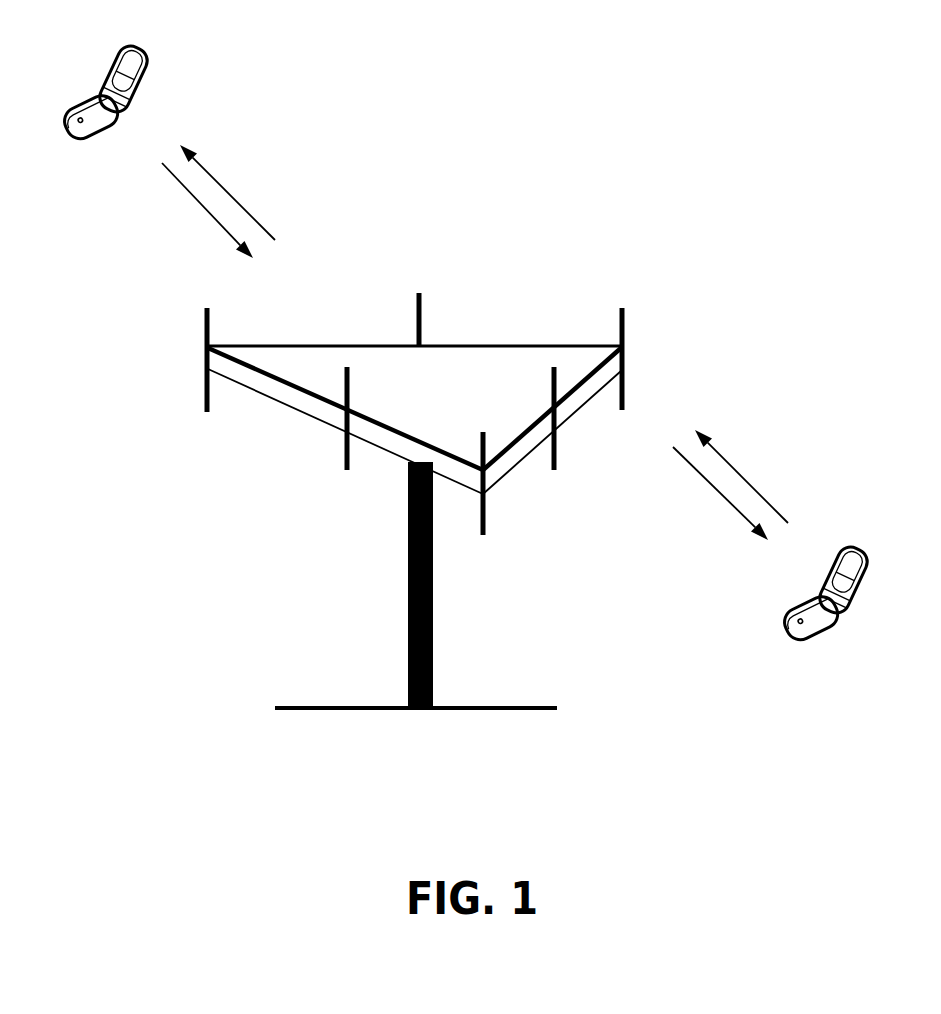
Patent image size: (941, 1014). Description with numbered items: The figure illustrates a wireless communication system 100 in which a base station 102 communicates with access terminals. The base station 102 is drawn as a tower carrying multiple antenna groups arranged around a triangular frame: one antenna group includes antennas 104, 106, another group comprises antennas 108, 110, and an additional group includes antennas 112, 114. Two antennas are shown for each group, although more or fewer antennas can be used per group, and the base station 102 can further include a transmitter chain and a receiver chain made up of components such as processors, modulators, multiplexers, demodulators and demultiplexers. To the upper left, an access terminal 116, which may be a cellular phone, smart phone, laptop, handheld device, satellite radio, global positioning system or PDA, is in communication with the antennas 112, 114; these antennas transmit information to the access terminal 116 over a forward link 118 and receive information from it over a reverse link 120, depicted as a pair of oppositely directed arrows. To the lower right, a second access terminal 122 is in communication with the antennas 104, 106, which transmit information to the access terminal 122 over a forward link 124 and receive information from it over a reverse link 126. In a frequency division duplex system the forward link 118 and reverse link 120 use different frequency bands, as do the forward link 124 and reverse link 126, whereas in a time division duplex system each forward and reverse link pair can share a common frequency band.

The wireless communication system 100 is at (594, 95).
The base station 102 is at (436, 712).
The antenna 104 is at (623, 312).
The antenna 106 is at (555, 440).
The antenna 108 is at (484, 508).
The antenna 110 is at (347, 466).
The antenna 112 is at (208, 312).
The antenna 114 is at (420, 304).
The access terminal 116 is at (122, 57).
The forward link 118 is at (230, 193).
The reverse link 120 is at (218, 228).
The access terminal 122 is at (843, 550).
The forward link 124 is at (727, 507).
The reverse link 126 is at (737, 470).